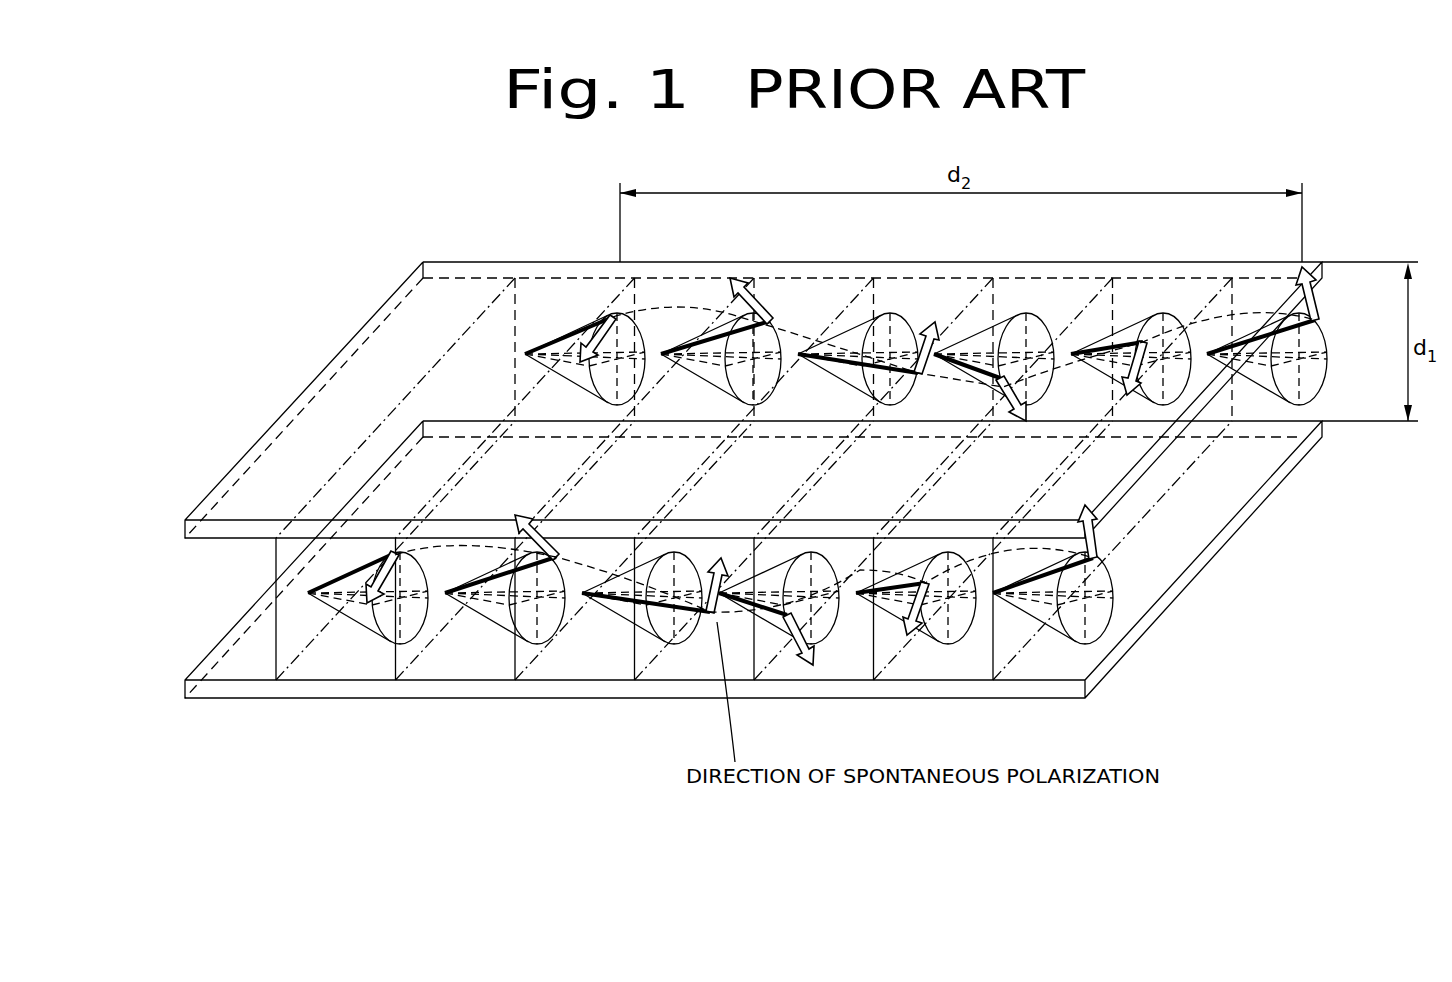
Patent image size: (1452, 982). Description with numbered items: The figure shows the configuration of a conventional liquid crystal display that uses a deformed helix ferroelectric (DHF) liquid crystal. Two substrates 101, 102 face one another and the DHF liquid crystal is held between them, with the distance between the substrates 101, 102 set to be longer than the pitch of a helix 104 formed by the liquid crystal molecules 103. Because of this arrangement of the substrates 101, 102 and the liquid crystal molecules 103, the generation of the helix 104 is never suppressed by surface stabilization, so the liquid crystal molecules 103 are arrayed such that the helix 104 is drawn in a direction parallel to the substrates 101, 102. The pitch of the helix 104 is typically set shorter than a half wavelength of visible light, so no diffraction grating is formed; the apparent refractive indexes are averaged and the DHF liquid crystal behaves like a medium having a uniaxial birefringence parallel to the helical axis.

The substrate 101 is at (230, 527).
The substrate 102 is at (243, 688).
The liquid crystal molecules 103 is at (567, 327).
The helix 104 is at (690, 305).